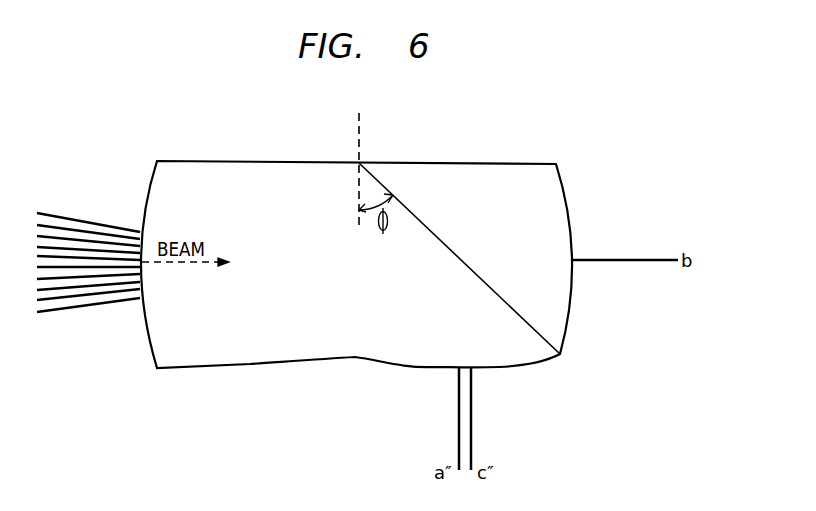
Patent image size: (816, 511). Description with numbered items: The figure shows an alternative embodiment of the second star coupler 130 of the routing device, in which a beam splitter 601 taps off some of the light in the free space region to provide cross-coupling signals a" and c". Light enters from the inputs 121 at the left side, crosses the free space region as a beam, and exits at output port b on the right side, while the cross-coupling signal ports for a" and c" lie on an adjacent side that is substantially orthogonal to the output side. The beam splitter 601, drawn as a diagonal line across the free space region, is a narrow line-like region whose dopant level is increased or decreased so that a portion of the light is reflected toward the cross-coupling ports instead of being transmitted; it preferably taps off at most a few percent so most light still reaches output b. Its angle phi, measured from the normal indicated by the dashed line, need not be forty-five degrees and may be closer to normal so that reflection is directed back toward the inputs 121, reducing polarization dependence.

The second star coupler 130 is at (341, 97).
The beam splitter 601 is at (477, 280).
The inputs 121 is at (79, 311).